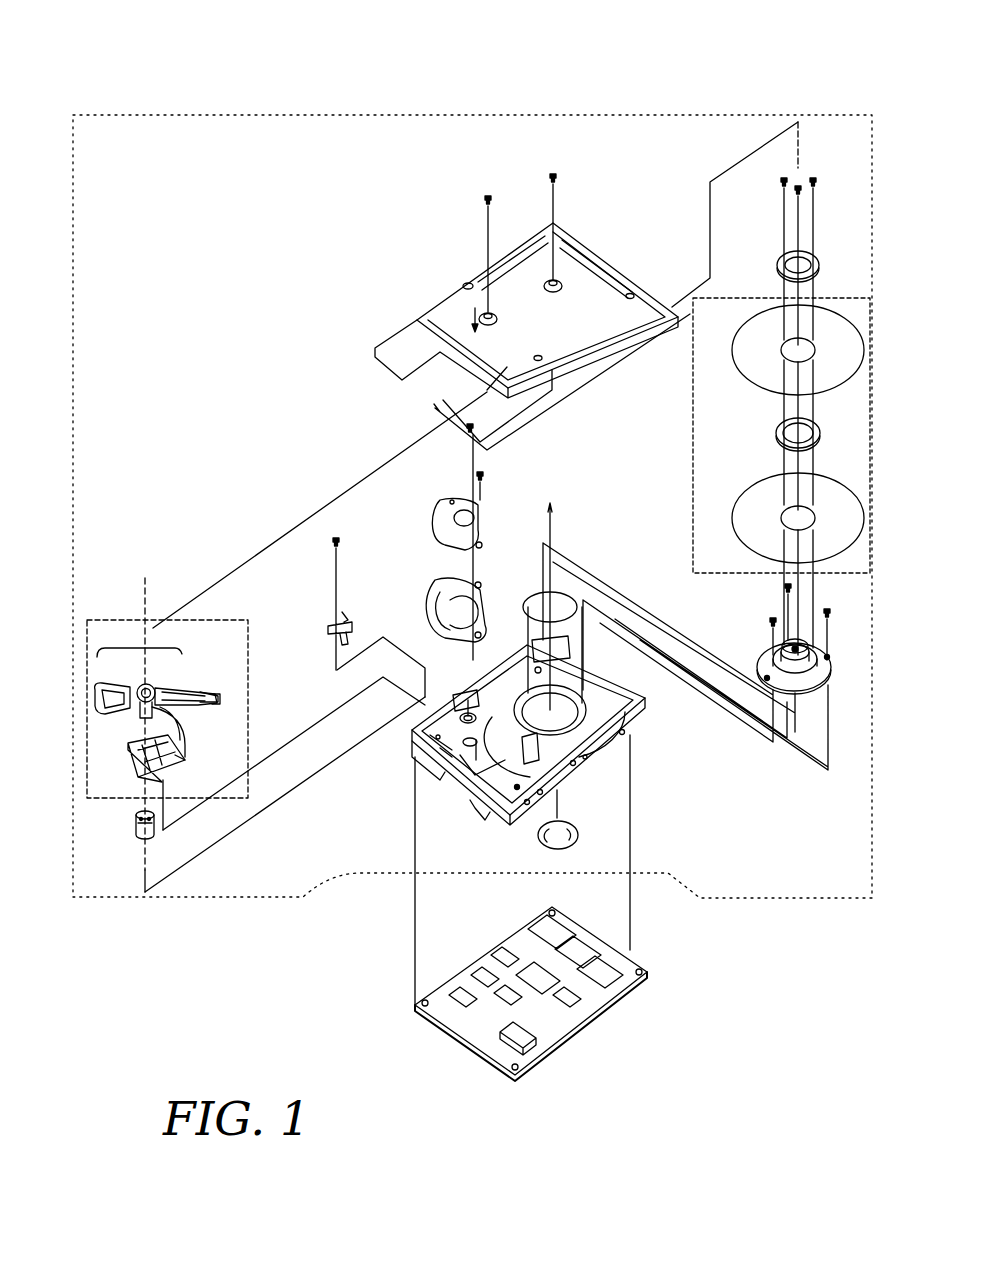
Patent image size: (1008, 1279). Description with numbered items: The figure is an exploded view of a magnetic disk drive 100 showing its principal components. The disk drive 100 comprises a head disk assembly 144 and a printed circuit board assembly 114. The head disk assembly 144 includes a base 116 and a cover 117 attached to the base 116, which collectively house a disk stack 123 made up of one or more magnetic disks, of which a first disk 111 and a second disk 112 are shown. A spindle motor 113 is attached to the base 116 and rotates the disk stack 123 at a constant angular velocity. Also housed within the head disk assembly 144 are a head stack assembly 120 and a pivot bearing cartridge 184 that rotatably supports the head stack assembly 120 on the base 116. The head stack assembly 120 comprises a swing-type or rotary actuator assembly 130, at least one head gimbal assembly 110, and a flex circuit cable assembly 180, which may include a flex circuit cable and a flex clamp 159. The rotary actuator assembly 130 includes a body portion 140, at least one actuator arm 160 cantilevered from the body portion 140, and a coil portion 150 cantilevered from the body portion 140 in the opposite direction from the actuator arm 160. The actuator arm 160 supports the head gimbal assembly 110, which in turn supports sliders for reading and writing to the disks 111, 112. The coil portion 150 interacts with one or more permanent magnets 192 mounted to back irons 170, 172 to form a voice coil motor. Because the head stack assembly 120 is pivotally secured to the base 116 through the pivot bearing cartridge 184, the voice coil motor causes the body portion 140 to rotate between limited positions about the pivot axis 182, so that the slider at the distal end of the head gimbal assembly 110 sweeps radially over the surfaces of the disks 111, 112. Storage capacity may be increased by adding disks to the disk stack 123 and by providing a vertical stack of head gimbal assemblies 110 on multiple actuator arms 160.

The magnetic disk drive 100 is at (305, 82).
The head disk assembly 144 is at (727, 900).
The cover 117 is at (440, 297).
The disk stack 123 is at (741, 416).
The second disk 112 is at (752, 392).
The first disk 111 is at (740, 497).
The spindle motor 113 is at (767, 657).
The base 116 is at (633, 743).
The printed circuit board assembly 114 is at (573, 1030).
The back iron 170 is at (460, 520).
The back iron 172 is at (482, 584).
The permanent magnet 192 is at (445, 603).
The pivot axis 182 is at (145, 582).
The head stack assembly 120 is at (167, 667).
The rotary actuator assembly 130 is at (139, 640).
The body portion 140 is at (150, 690).
The actuator arm 160 is at (210, 703).
The head gimbal assembly 110 is at (215, 697).
The coil portion 150 is at (105, 715).
The flex clamp 159 is at (145, 765).
The flex circuit cable assembly 180 is at (198, 763).
The pivot bearing cartridge 184 is at (137, 830).